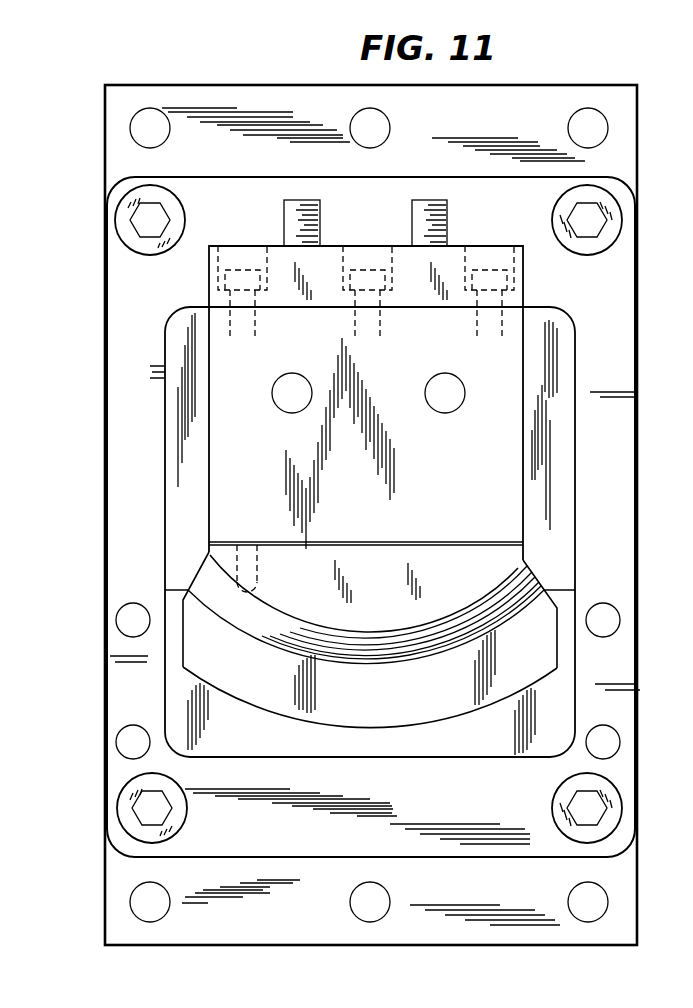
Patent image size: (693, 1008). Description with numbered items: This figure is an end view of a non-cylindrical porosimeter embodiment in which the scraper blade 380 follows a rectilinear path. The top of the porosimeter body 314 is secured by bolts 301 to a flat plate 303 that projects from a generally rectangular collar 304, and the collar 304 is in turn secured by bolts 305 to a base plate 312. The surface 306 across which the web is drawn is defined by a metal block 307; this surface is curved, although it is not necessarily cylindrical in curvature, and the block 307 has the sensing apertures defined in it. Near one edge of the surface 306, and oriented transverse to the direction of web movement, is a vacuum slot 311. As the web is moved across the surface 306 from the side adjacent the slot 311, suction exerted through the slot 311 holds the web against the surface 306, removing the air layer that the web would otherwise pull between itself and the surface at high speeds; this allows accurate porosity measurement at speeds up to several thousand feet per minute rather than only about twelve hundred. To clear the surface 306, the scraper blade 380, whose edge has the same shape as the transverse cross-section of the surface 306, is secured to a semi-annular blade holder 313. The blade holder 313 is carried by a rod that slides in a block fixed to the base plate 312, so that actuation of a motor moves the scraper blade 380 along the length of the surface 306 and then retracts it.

The bolts 301 is at (249, 262).
The flat plate 303 is at (323, 262).
The collar 304 is at (226, 196).
The bolts 305 is at (152, 234).
The surface 306 is at (445, 615).
The metal block 307 is at (438, 636).
The vacuum slot 311 is at (255, 594).
The base plate 312 is at (578, 76).
The blade holder 313 is at (276, 697).
The porosimeter body 314 is at (508, 413).
The scraper blade 380 is at (372, 657).